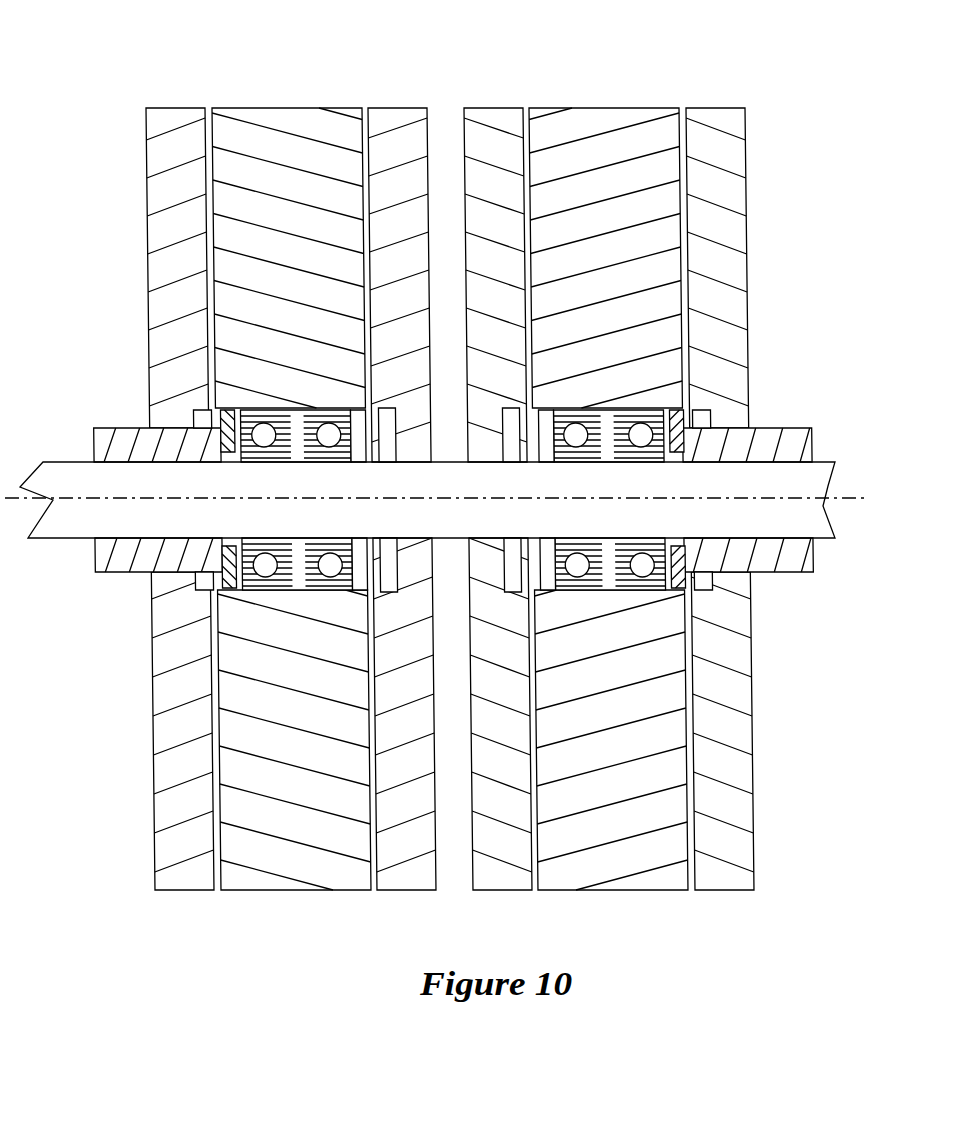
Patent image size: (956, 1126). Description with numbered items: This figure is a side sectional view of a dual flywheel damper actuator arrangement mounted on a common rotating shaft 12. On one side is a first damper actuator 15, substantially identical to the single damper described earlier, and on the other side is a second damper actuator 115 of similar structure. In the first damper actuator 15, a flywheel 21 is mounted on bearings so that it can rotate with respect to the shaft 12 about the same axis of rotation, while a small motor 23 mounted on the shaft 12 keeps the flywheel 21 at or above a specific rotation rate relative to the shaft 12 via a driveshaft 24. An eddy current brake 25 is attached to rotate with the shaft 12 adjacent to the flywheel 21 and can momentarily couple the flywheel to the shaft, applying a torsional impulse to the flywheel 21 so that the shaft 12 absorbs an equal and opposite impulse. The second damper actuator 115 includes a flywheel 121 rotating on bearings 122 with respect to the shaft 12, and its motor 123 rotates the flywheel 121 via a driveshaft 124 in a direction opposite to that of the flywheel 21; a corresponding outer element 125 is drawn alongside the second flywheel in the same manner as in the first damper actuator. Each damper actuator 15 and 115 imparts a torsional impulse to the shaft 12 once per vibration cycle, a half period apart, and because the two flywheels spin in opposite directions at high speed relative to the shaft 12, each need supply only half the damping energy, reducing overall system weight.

The shaft 12 is at (835, 540).
The damper actuator 15 is at (640, 504).
The second damper actuator 115 is at (240, 504).
The flywheel 21 is at (578, 108).
The flywheel 121 is at (261, 108).
The eddy current brake 25 is at (489, 108).
The second end cap 125 is at (178, 108).
The motor 23 is at (783, 572).
The motor 123 is at (127, 427).
The driveshaft 24 is at (700, 590).
The driveshaft 124 is at (195, 590).
The bearings 122 is at (262, 590).